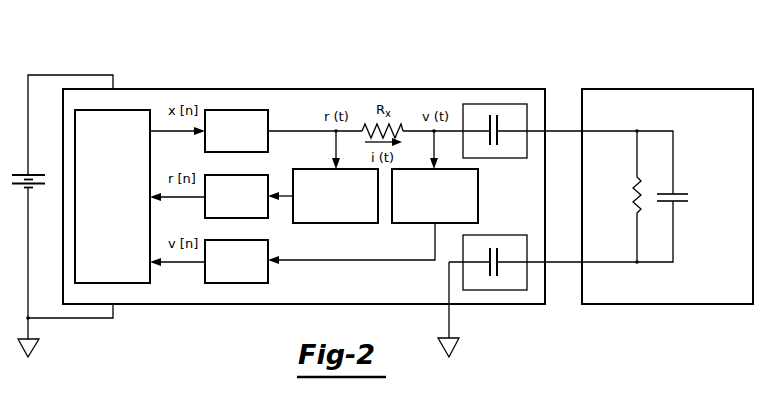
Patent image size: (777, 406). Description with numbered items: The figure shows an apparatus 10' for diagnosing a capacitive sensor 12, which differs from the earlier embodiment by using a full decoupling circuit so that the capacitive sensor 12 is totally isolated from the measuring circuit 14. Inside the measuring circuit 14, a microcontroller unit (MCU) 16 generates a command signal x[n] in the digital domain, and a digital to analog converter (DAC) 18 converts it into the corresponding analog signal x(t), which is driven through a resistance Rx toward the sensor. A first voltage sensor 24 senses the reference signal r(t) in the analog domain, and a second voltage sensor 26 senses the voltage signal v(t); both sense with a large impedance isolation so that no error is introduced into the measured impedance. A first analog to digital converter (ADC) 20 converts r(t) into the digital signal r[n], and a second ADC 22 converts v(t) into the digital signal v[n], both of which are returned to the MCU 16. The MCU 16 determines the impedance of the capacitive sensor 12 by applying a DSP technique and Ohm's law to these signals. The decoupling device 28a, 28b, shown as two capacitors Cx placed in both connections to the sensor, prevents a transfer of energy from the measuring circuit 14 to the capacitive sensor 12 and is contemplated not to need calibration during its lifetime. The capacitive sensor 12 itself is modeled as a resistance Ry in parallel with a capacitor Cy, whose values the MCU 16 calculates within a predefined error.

The apparatus 10' is at (505, 30).
The capacitive sensor 12 is at (668, 89).
The measuring circuit 14 is at (305, 89).
The microcontroller unit (MCU) 16 is at (135, 110).
The digital to analog converter (DAC) 18 is at (240, 110).
The first analog to digital converter (ADC) 20 is at (265, 174).
The second analog to digital converter (ADC) 22 is at (266, 238).
The first voltage sensor 24 is at (337, 223).
The second voltage sensor 26 is at (478, 196).
The decoupling device 28a is at (494, 104).
The decoupling device 28b is at (497, 290).